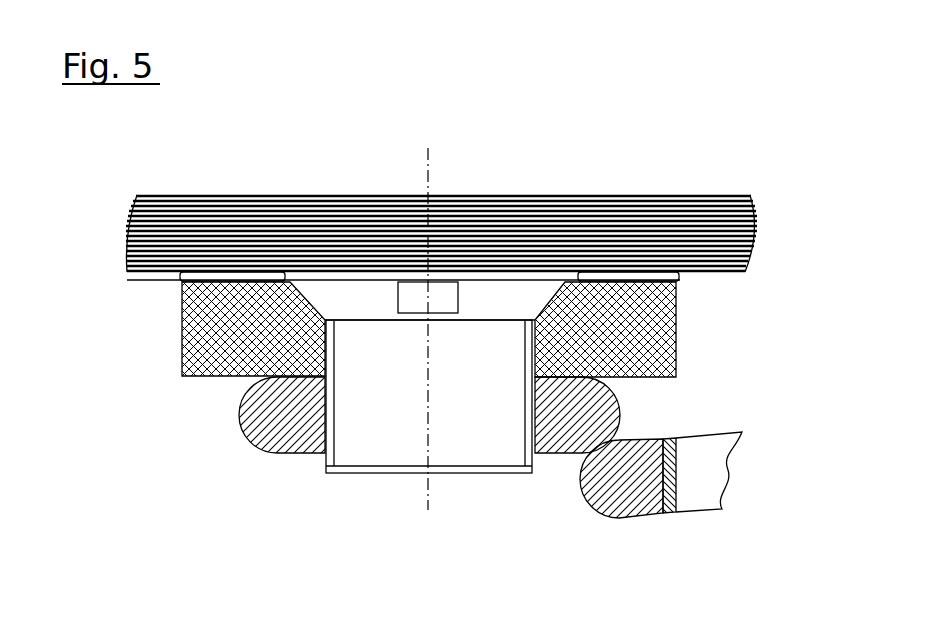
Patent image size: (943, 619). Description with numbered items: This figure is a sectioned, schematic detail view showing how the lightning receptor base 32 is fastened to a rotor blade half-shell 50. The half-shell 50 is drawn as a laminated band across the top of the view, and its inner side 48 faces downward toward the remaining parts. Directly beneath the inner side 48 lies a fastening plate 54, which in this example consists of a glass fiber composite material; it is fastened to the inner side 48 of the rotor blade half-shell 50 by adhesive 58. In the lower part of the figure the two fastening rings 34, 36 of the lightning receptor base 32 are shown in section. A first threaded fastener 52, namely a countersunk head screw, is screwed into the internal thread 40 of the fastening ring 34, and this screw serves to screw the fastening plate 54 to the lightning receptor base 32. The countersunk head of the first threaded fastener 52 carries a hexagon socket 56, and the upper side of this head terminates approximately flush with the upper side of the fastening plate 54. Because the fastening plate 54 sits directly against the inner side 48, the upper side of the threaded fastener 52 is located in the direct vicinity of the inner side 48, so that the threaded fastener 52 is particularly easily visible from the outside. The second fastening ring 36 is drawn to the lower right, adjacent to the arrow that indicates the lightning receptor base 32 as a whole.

The lightning receptor base 32 is at (553, 496).
The fastening ring 34 is at (257, 438).
The fastening ring 36 is at (633, 502).
The internal thread 40 is at (332, 445).
The inner side 48 is at (723, 275).
The rotor blade half-shell 50 is at (595, 212).
The first threaded fastener 52 is at (385, 437).
The fastening plate 54 is at (203, 340).
The hexagon socket 56 is at (440, 288).
The adhesive 58 is at (247, 270).